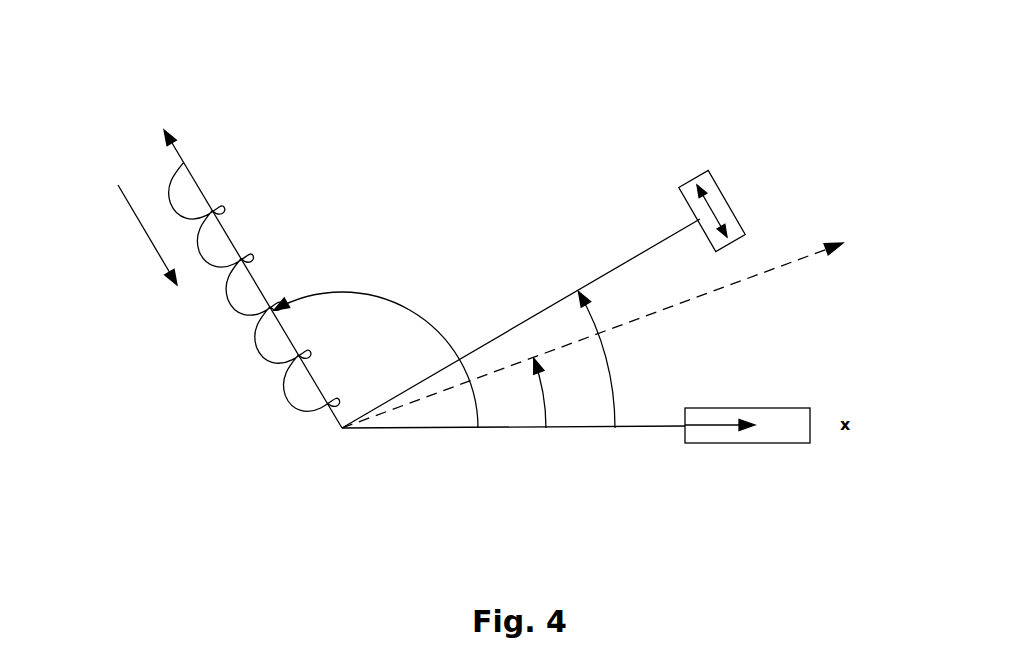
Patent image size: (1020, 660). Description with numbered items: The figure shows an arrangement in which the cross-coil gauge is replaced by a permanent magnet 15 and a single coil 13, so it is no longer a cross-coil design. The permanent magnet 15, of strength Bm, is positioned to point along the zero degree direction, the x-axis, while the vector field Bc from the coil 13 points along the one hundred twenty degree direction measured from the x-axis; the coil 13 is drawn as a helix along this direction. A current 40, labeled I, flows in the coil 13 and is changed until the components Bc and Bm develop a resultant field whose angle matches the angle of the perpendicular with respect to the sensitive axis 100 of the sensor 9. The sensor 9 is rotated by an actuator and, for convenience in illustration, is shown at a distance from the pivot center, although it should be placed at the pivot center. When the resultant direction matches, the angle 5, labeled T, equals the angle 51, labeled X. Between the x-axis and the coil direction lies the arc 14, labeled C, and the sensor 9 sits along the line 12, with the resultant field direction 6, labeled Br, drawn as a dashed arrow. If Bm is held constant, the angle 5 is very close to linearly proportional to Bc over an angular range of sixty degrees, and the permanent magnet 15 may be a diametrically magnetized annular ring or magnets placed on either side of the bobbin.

The coil 13 is at (165, 177).
The current 40 is at (140, 227).
The angle C arc 14 is at (402, 300).
The sensor axis 12 is at (618, 262).
The sensitive axis 100 is at (693, 210).
The sensor 9 is at (723, 190).
The reference field direction Br 6 is at (733, 280).
The angle X 51 is at (608, 360).
The angle T 5 is at (543, 398).
The permanent magnet 15 is at (738, 443).